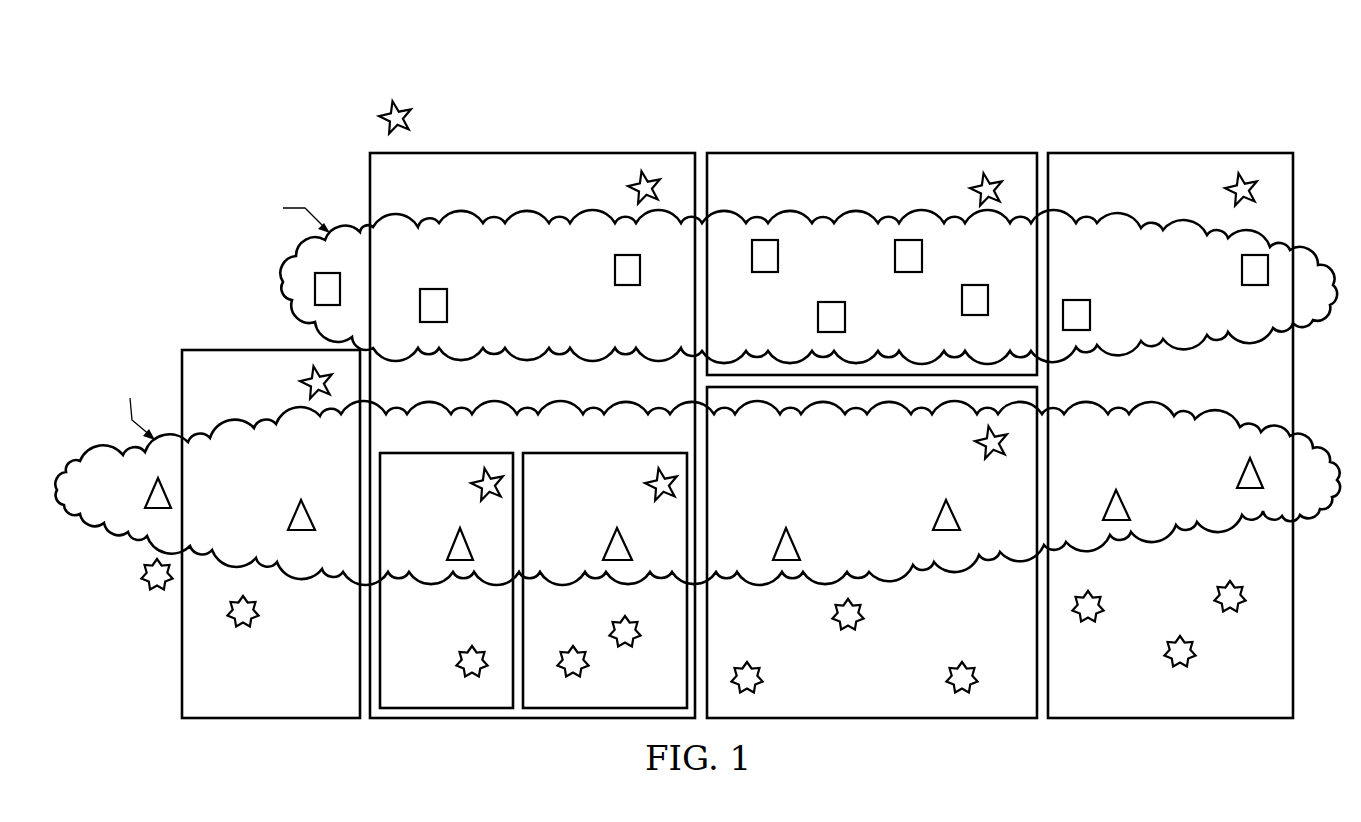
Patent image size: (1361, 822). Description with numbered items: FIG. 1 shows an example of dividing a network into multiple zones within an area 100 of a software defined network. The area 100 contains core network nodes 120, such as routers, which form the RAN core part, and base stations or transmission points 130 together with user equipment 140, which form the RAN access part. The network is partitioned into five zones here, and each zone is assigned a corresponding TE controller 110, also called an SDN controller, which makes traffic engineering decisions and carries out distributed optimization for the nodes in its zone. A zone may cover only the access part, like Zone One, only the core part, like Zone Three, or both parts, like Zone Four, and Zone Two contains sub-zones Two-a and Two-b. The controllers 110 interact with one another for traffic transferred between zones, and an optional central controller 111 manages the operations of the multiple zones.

The area of a software defined network 100 is at (607, 77).
The TE controller 110 is at (303, 393).
The central controller 111 is at (383, 106).
The core network node 120 is at (315, 290).
The base station or transmission point 130 is at (150, 496).
The user equipment 140 is at (145, 585).